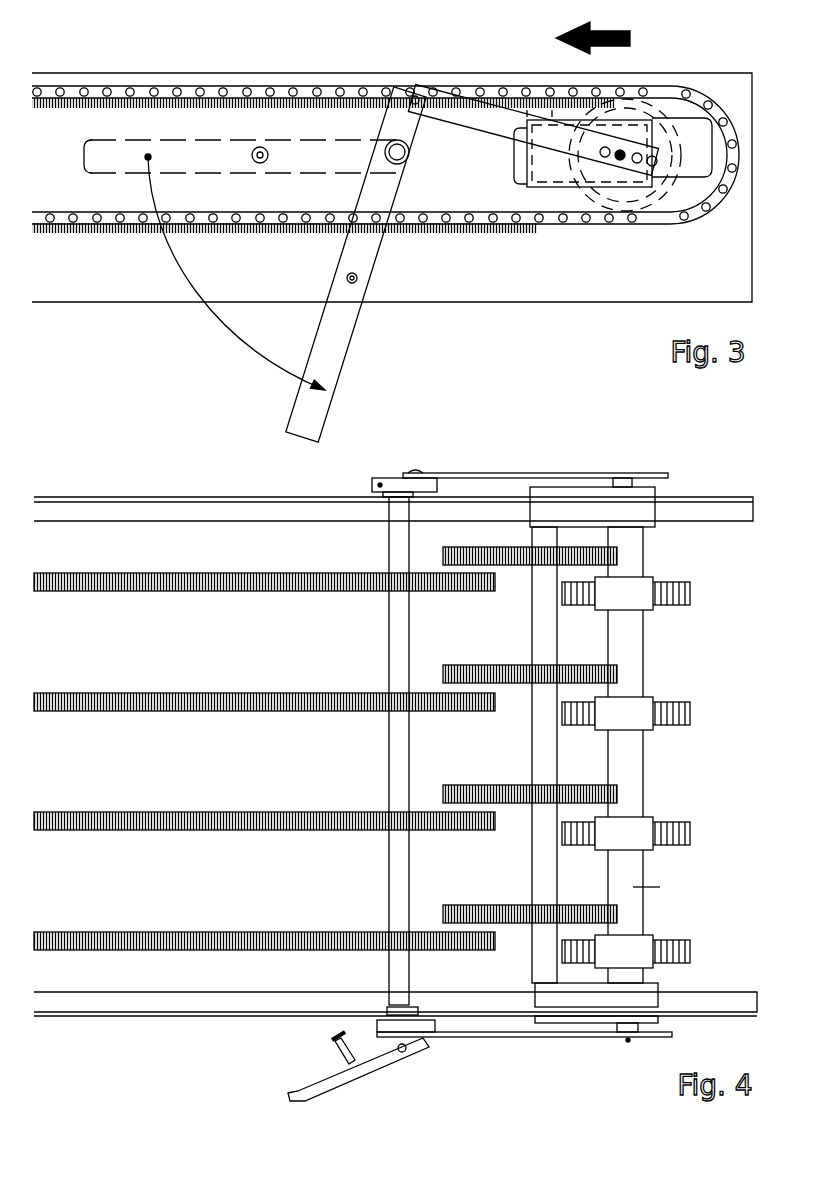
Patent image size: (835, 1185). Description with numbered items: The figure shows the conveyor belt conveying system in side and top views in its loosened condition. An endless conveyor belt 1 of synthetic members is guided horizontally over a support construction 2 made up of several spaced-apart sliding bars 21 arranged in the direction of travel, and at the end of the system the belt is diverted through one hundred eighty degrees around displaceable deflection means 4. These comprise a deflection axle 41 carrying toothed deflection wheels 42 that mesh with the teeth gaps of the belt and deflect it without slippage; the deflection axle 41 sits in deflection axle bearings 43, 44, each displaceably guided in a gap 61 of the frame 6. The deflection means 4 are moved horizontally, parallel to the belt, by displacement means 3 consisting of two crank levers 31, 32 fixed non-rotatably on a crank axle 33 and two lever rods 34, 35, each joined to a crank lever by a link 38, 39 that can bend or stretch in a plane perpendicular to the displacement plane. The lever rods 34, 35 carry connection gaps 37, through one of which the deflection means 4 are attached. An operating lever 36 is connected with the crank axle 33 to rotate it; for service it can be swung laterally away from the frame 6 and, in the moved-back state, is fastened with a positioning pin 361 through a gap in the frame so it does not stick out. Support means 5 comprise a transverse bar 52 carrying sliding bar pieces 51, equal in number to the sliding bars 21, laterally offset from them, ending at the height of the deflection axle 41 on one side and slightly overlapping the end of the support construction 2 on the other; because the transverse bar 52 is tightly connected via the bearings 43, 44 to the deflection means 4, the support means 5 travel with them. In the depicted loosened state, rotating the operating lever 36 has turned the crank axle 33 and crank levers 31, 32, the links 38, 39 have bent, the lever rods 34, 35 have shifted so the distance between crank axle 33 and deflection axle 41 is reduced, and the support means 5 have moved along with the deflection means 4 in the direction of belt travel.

In FIG. 3, the endless conveyor belt 1 is at (133, 97).
In FIG. 3, the support construction 2 is at (385, 129).
In FIG. 4, the support construction 2 is at (264, 672).
In FIG. 4, the sliding bars 21 is at (128, 585).
In FIG. 3, the displacement means 3 is at (445, 165).
In FIG. 3, the crank lever 31 is at (395, 122).
In FIG. 4, the crank lever 31 is at (377, 1023).
In FIG. 4, the crank lever 32 is at (400, 482).
In FIG. 3, the crank axle 33 is at (385, 153).
In FIG. 4, the crank axle 33 is at (393, 540).
In FIG. 3, the lever rod 34 is at (468, 118).
In FIG. 4, the lever rod 34 is at (538, 1038).
In FIG. 4, the lever rod 35 is at (552, 475).
In FIG. 3, the operating lever 36 is at (338, 343).
In FIG. 4, the operating lever 36 is at (305, 1100).
In FIG. 4, the positioning pin 361 is at (340, 1057).
In FIG. 3, the connection gaps 37 is at (612, 185).
In FIG. 3, the link 38 is at (417, 96).
In FIG. 4, the link 38 is at (420, 1045).
In FIG. 4, the link 39 is at (425, 472).
In FIG. 3, the displaceable deflection means 4 is at (655, 128).
In FIG. 4, the displaceable deflection means 4 is at (650, 733).
In FIG. 4, the deflection axle 41 is at (640, 887).
In FIG. 4, the toothed deflection wheels 42 is at (680, 592).
In FIG. 3, the deflection axle bearing 43 is at (637, 138).
In FIG. 4, the deflection axle bearing 43 is at (642, 995).
In FIG. 4, the deflection axle bearing 44 is at (570, 518).
In FIG. 3, the support means 5 is at (600, 112).
In FIG. 4, the support means 5 is at (585, 777).
In FIG. 4, the sliding bar pieces 51 is at (593, 553).
In FIG. 4, the transverse bar 52 is at (542, 587).
In FIG. 3, the frame 6 is at (132, 272).
In FIG. 4, the frame 6 is at (190, 512).
In FIG. 3, the gap 61 is at (695, 157).